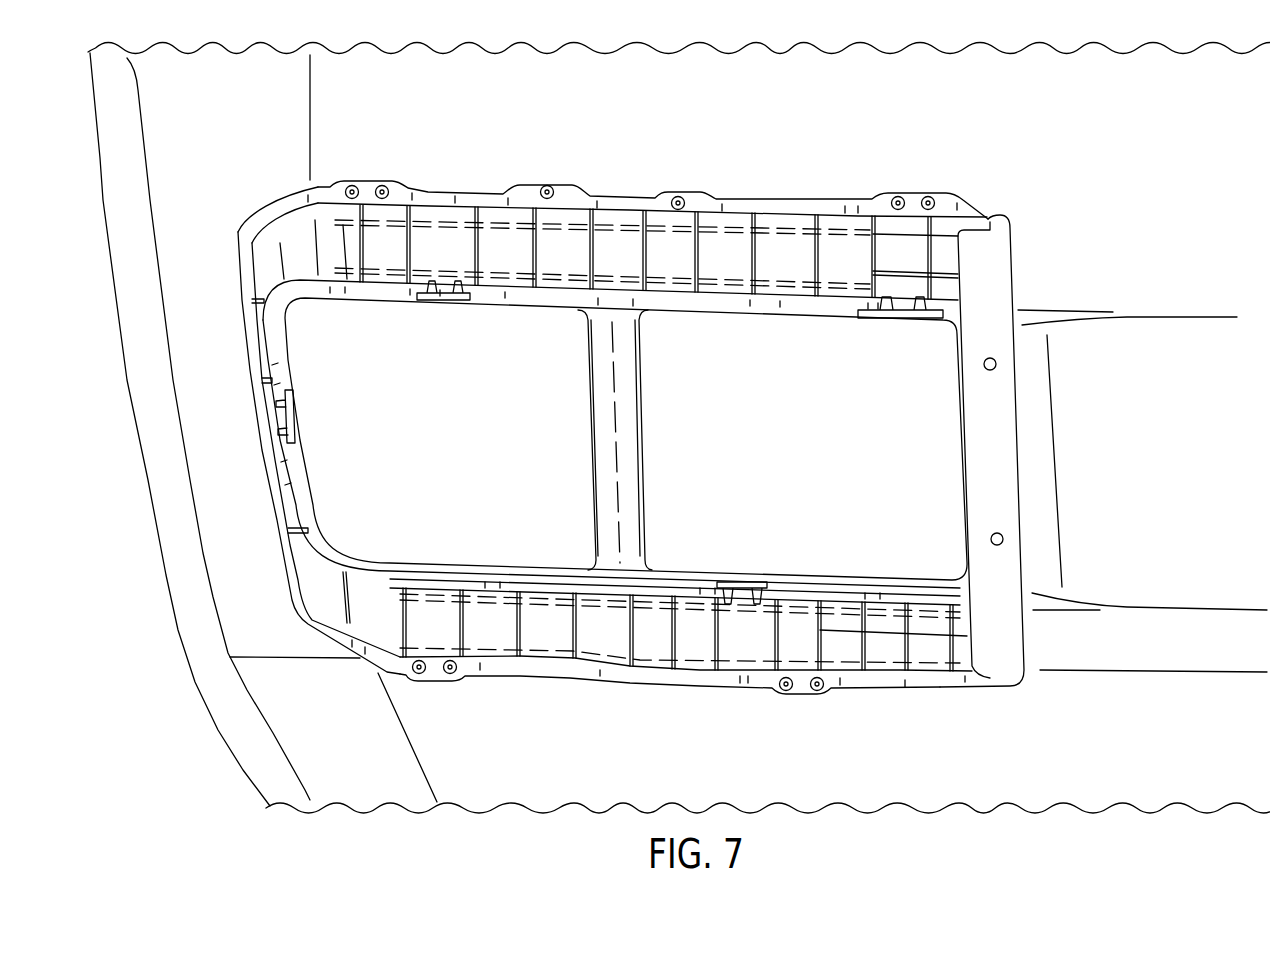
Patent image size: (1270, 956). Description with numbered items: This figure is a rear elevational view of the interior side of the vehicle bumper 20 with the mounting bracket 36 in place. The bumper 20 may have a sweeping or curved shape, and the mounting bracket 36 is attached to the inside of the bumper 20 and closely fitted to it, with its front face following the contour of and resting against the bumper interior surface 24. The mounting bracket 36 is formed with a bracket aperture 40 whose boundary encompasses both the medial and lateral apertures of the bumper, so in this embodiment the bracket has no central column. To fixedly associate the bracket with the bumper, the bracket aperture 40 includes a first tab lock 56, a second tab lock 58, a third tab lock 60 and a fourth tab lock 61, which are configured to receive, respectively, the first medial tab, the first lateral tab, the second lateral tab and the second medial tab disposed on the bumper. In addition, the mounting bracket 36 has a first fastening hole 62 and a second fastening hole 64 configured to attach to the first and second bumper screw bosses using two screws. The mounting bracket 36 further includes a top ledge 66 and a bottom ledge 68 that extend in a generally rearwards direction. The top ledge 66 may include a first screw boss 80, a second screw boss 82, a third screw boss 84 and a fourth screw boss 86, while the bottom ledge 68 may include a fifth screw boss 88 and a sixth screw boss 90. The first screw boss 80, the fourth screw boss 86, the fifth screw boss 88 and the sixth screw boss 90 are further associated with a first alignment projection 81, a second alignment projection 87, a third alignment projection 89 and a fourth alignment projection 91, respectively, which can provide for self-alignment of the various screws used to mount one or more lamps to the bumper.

The bumper 20 is at (618, 80).
The bumper interior surface 24 is at (1078, 123).
The mounting bracket 36 is at (282, 202).
The bracket aperture 40 is at (343, 307).
The first tab lock 56 is at (745, 582).
The second tab lock 58 is at (293, 418).
The third tab lock 60 is at (456, 302).
The fourth tab lock 61 is at (885, 320).
The first fastening hole 62 is at (996, 365).
The second fastening hole 64 is at (991, 538).
The top ledge 66 is at (790, 205).
The bottom ledge 68 is at (667, 688).
The first screw boss 80 is at (351, 185).
The first alignment projection 81 is at (400, 188).
The second screw boss 82 is at (547, 185).
The third screw boss 84 is at (678, 196).
The fourth screw boss 86 is at (927, 196).
The second alignment projection 87 is at (897, 196).
The fifth screw boss 88 is at (817, 694).
The third alignment projection 89 is at (786, 694).
The sixth screw boss 90 is at (449, 676).
The fourth alignment projection 91 is at (417, 676).